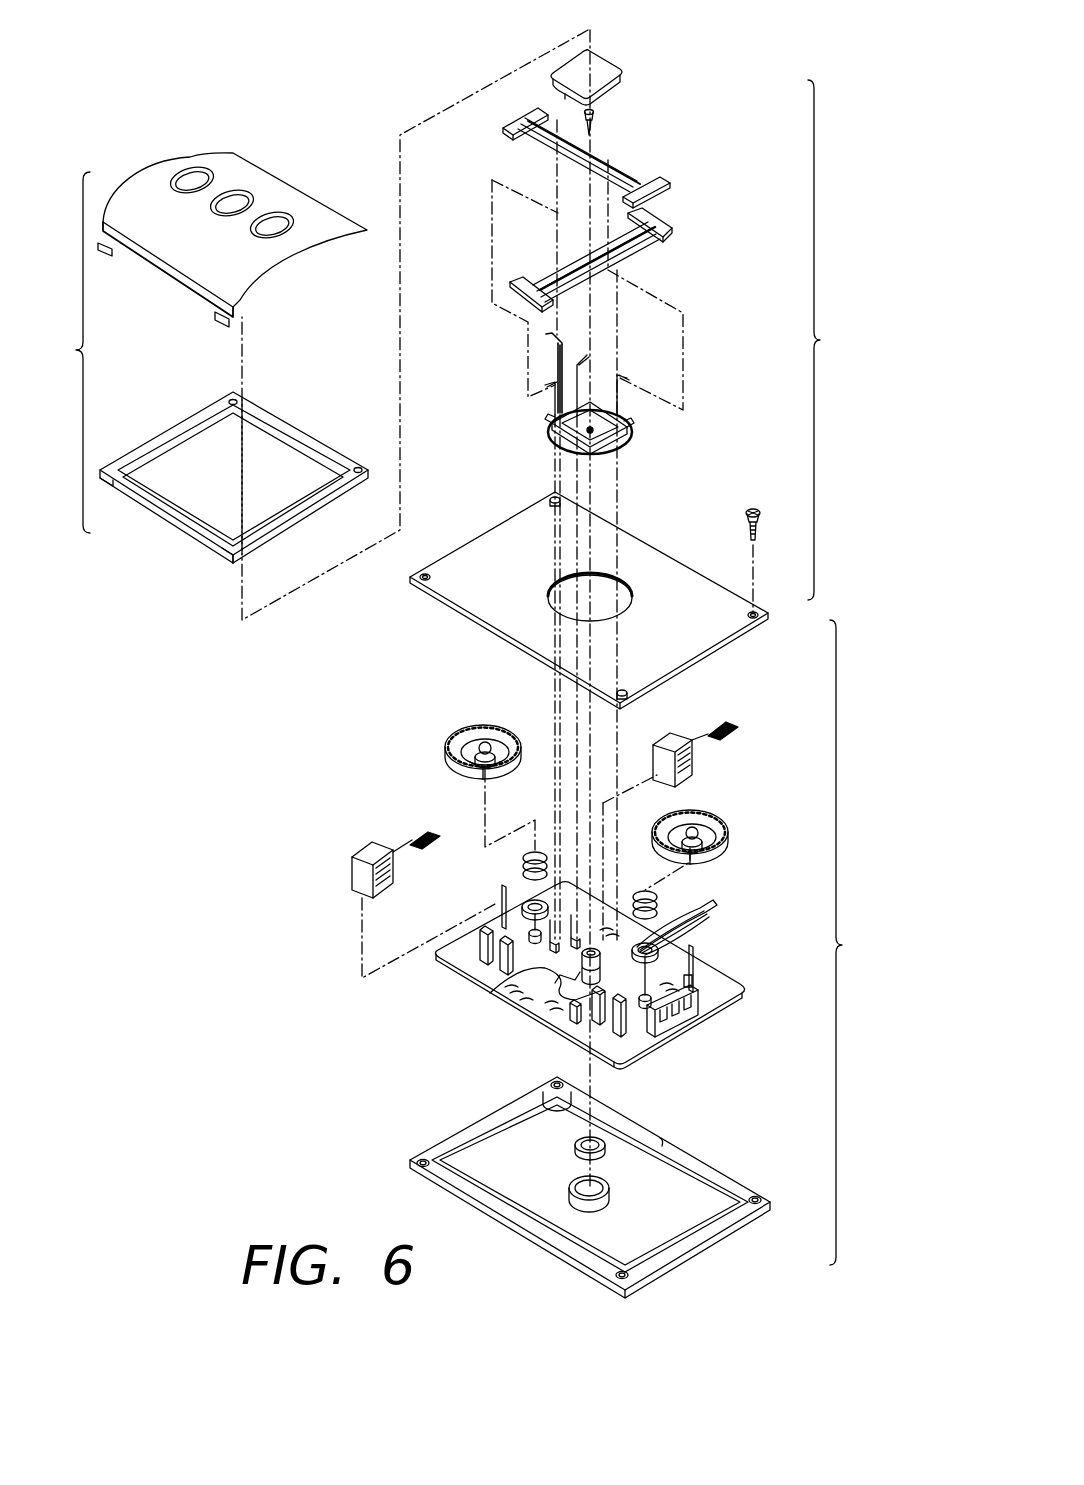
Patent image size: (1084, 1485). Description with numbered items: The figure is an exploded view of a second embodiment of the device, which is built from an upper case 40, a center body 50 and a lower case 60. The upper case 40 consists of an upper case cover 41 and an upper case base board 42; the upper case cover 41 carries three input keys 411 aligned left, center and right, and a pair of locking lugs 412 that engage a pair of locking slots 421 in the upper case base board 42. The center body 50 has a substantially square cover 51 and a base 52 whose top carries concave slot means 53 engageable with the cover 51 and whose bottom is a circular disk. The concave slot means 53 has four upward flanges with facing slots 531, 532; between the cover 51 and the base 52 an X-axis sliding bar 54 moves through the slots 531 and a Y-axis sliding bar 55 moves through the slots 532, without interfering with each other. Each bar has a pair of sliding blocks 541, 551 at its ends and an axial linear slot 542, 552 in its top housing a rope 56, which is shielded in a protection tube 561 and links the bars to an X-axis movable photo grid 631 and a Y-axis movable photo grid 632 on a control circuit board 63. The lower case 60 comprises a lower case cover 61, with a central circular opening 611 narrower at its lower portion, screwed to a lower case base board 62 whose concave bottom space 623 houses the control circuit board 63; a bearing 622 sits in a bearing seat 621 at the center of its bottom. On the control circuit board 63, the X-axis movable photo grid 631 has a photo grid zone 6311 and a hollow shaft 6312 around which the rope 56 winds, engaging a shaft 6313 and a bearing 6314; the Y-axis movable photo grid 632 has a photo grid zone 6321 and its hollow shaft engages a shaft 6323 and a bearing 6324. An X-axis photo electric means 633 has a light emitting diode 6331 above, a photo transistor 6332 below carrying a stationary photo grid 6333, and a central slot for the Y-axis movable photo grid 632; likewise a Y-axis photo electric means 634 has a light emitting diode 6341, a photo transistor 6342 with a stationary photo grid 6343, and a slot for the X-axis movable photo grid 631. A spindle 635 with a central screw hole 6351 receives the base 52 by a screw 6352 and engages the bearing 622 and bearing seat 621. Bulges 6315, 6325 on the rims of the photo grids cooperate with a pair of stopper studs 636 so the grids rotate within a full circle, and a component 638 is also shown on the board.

The upper case 40 is at (65, 352).
The upper case cover 41 is at (232, 218).
The input keys 411 is at (187, 178).
The locking lugs 412 is at (102, 253).
The upper case base board 42 is at (234, 480).
The locking slots 421 is at (105, 486).
The center body 50 is at (839, 340).
The cover 51 is at (592, 75).
The screw 6352 is at (597, 117).
The X-axis sliding bar 54 is at (597, 158).
The sliding blocks 541 is at (667, 183).
The linear slot 542 is at (600, 149).
The Y-axis sliding bar 55 is at (629, 252).
The sliding blocks 551 is at (668, 225).
The linear slot 552 is at (580, 253).
The rope 56 is at (510, 315).
The protection tube 561 is at (547, 348).
The concave slot means 53 is at (577, 617).
The base 52 is at (591, 466).
The slots 531 is at (555, 407).
The slots 532 is at (613, 403).
The lower case cover 61 is at (564, 590).
The circular opening 611 is at (567, 600).
The lower case 60 is at (860, 942).
The control circuit board 63 is at (607, 976).
The X-axis movable photo grid 631 is at (443, 744).
The photo grid zone 6311 is at (482, 723).
The hollow shaft 6312 is at (478, 773).
The bulge 6315 is at (515, 762).
The Y-axis movable photo grid 632 is at (737, 901).
The photo grid zone 6321 is at (723, 833).
The shaft 6323 is at (700, 857).
The bulge 6325 is at (728, 838).
The X-axis photo electric means 633 is at (749, 734).
The light emitting diode 6331 is at (670, 742).
The photo transistor 6332 is at (695, 768).
The stationary photo grid 6333 is at (737, 728).
The Y-axis photo electric means 634 is at (332, 857).
The light emitting diode 6341 is at (373, 857).
The photo transistor 6342 is at (393, 877).
The stationary photo grid 6343 is at (412, 842).
The bearing 6314 is at (522, 910).
The shaft 6313 is at (513, 958).
The spindle 635 is at (550, 1003).
The screw hole 6351 is at (537, 970).
The stopper studs 636 is at (503, 893).
The bearing 6324 is at (700, 985).
The terminal block 638 is at (707, 1023).
The lower case base board 62 is at (573, 1180).
The bearing seat 621 is at (607, 1197).
The bearing 622 is at (603, 1140).
The concave bottom space 623 is at (680, 1233).